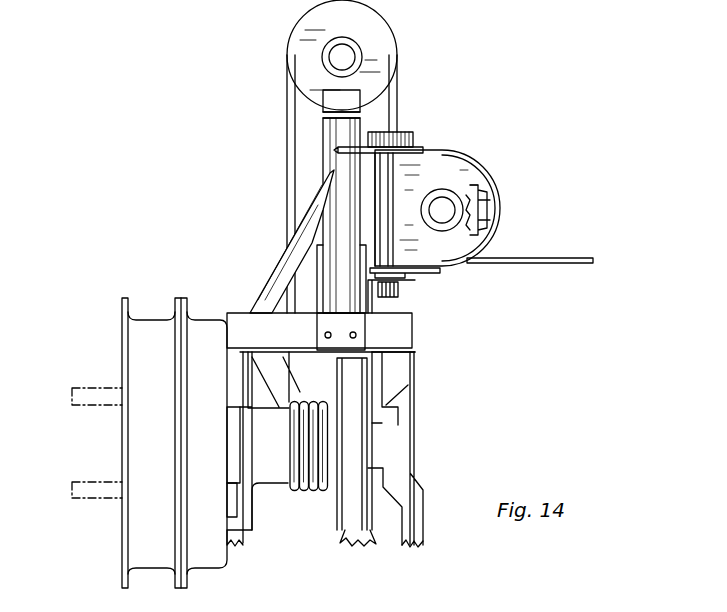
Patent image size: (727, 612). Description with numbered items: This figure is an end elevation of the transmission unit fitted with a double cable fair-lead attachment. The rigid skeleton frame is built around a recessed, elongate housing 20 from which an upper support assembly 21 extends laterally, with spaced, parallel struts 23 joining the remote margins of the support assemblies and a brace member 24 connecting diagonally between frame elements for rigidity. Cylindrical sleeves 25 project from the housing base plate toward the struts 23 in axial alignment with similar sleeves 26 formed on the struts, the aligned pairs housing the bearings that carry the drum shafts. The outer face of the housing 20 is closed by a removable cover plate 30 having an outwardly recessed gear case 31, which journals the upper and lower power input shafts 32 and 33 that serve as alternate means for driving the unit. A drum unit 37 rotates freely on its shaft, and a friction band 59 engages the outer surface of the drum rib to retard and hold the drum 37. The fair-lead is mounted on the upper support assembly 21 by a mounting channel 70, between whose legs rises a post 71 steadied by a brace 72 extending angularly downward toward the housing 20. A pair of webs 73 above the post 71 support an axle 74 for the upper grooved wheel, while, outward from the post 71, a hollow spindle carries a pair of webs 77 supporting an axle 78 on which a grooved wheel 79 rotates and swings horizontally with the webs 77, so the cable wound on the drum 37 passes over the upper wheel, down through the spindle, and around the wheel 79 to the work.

The housing 20 is at (220, 476).
The upper support assembly 21 is at (321, 332).
The struts 23 is at (415, 410).
The brace member 24 is at (274, 380).
The cylindrical sleeves 25 is at (233, 448).
The sleeves 26 is at (391, 448).
The cover plate 30 is at (175, 311).
The gear case 31 is at (151, 460).
The upper power input shaft 32 is at (91, 395).
The lower power input shaft 33 is at (97, 490).
The drum unit 37 is at (277, 470).
The friction band 59 is at (356, 449).
The mounting channel 70 is at (317, 287).
The post 71 is at (337, 157).
The brace 72 is at (285, 250).
The webs 73 is at (342, 156).
The axle 74 is at (331, 58).
The webs 77 is at (434, 231).
The axle 78 is at (442, 218).
The grooved wheel 79 is at (485, 200).